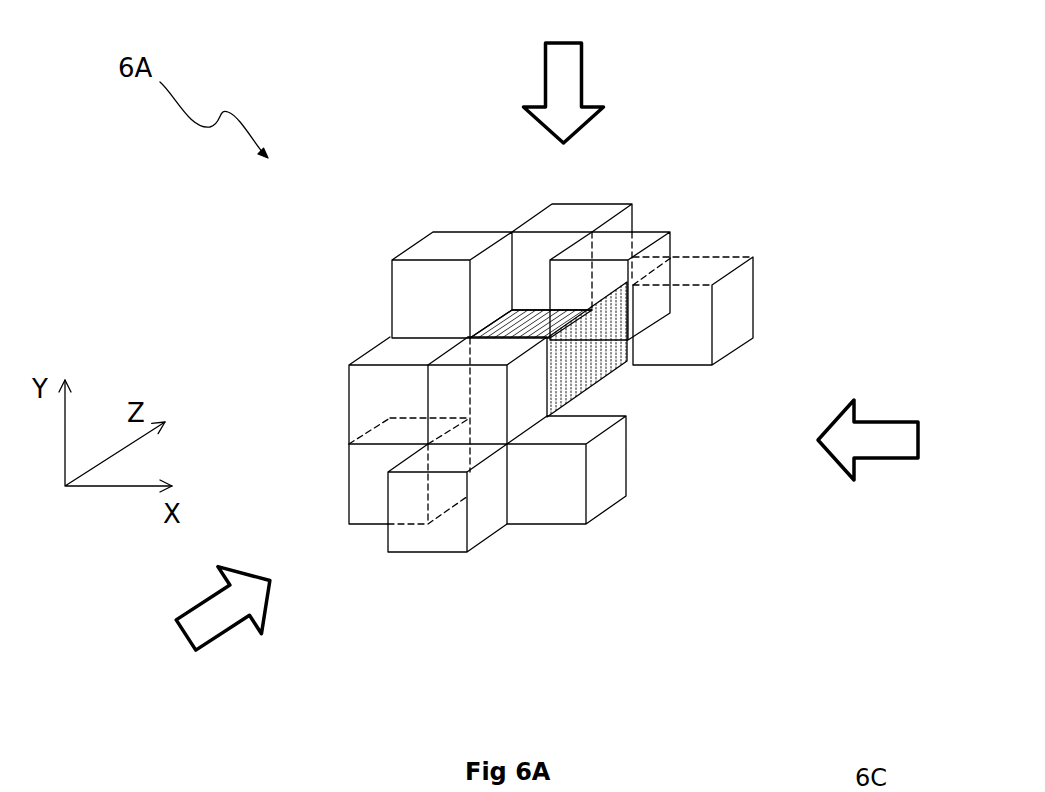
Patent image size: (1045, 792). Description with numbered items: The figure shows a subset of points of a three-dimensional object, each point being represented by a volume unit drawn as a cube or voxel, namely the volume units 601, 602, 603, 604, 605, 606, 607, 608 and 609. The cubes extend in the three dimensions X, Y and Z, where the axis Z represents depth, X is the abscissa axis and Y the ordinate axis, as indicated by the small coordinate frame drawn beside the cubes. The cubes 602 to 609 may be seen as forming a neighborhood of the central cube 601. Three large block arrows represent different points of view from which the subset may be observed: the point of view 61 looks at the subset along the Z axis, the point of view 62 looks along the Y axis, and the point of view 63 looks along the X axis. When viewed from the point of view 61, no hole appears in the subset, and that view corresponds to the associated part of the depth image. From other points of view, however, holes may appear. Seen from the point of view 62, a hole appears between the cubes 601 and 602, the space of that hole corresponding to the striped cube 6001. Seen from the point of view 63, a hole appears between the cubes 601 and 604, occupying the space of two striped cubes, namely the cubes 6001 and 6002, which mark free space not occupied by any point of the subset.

The volume unit 601 is at (487, 404).
The volume unit 602 is at (560, 244).
The volume unit 603 is at (605, 272).
The volume unit 604 is at (700, 315).
The volume unit 605 is at (572, 512).
The volume unit 606 is at (442, 537).
The volume unit 607 is at (365, 502).
The volume unit 608 is at (365, 400).
The volume unit 609 is at (405, 297).
The hole cube 6001 is at (575, 400).
The hole cube 6002 is at (615, 375).
The point of view 61 is at (197, 602).
The point of view 62 is at (582, 57).
The point of view 63 is at (878, 420).